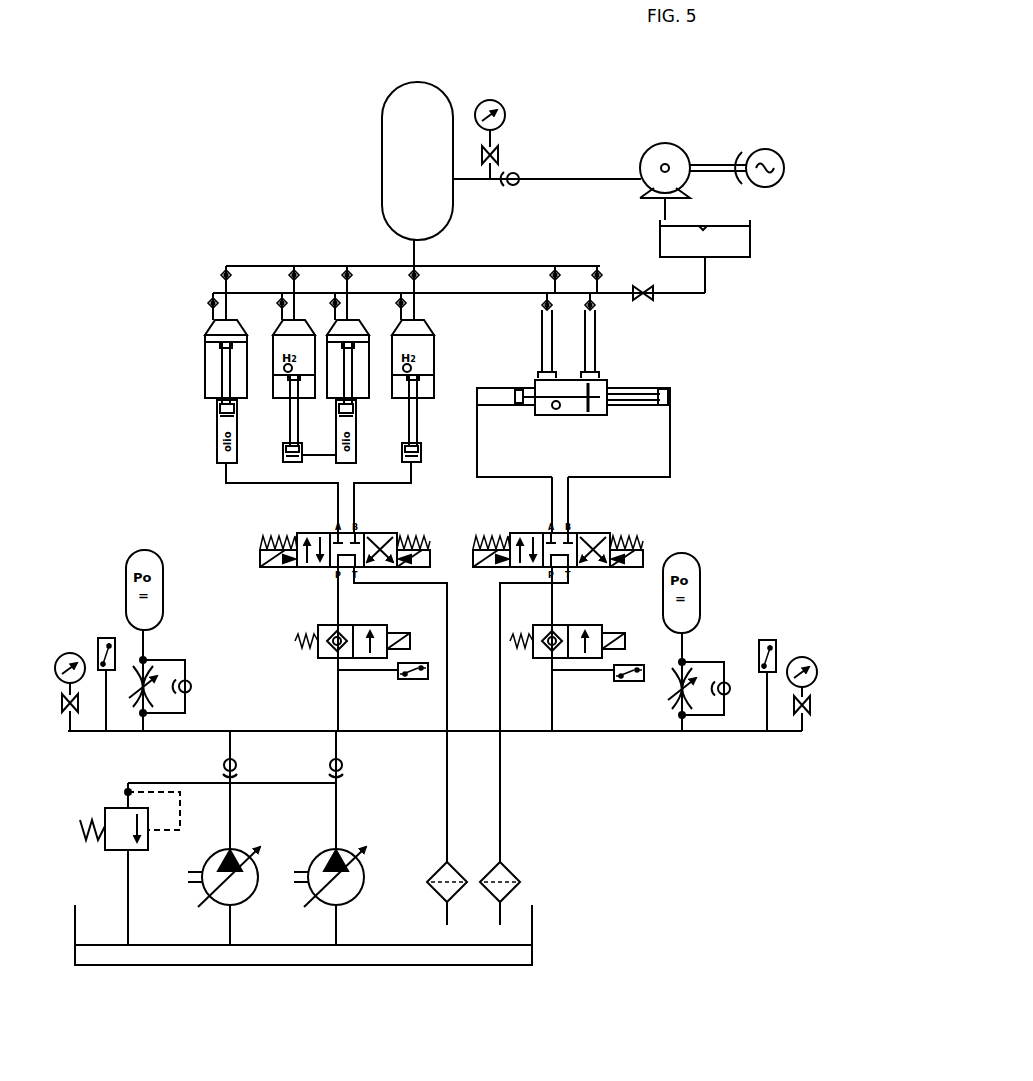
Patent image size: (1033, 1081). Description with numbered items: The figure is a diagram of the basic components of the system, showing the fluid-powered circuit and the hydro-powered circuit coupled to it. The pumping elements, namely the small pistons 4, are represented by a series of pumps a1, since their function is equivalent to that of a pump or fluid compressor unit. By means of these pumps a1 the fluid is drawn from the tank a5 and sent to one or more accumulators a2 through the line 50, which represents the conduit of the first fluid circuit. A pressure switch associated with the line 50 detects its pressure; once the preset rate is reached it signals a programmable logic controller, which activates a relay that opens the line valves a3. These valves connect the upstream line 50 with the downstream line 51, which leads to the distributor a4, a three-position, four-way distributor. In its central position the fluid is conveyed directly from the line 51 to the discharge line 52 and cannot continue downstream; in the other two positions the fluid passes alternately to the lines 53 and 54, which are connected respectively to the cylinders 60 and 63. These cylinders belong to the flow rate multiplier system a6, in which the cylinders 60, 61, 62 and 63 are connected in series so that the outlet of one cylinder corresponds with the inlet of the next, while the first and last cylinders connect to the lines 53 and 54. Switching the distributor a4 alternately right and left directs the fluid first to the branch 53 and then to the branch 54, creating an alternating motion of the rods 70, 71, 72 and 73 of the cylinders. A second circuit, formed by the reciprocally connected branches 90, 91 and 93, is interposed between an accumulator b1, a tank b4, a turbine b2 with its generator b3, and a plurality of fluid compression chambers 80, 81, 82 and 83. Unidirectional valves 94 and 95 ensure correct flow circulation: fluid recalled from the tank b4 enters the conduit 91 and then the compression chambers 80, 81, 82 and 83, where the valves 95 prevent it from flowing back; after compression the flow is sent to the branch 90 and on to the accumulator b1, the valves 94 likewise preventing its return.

The small pistons 4 is at (345, 836).
The line 50 is at (218, 731).
The line 51 is at (338, 598).
The discharge line 52 is at (500, 655).
The line 53 is at (262, 483).
The line 54 is at (385, 483).
The cylinder 60 is at (217, 452).
The cylinder 61 is at (290, 435).
The cylinder 62 is at (356, 450).
The cylinder 63 is at (420, 440).
The rod 70 is at (226, 372).
The rod 71 is at (292, 415).
The rod 72 is at (356, 372).
The rod 73 is at (420, 408).
The fluid compression chamber 80 is at (205, 345).
The fluid compression chamber 81 is at (287, 343).
The fluid compression chamber 82 is at (352, 320).
The fluid compression chamber 83 is at (433, 335).
The branch 90 is at (455, 266).
The conduit 91 is at (505, 293).
The branch 93 is at (566, 179).
The unidirectional valves 94 is at (222, 271).
The unidirectional valves 95 is at (209, 300).
The pumps a1 is at (246, 838).
The accumulators a2 is at (163, 640).
The line valves a3 is at (572, 650).
The distributor a4 is at (324, 551).
The tank a5 is at (303, 935).
The flow rate multiplier system a6 is at (557, 421).
The accumulator b1 is at (399, 174).
The turbine b2 is at (693, 162).
The generator b3 is at (761, 146).
The tank b4 is at (728, 256).